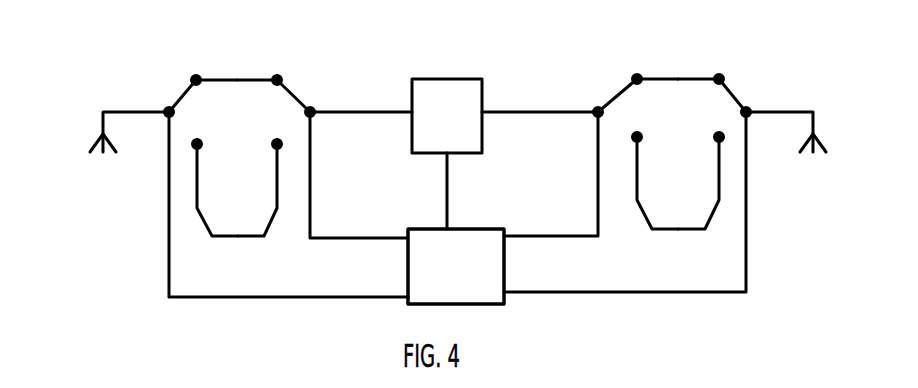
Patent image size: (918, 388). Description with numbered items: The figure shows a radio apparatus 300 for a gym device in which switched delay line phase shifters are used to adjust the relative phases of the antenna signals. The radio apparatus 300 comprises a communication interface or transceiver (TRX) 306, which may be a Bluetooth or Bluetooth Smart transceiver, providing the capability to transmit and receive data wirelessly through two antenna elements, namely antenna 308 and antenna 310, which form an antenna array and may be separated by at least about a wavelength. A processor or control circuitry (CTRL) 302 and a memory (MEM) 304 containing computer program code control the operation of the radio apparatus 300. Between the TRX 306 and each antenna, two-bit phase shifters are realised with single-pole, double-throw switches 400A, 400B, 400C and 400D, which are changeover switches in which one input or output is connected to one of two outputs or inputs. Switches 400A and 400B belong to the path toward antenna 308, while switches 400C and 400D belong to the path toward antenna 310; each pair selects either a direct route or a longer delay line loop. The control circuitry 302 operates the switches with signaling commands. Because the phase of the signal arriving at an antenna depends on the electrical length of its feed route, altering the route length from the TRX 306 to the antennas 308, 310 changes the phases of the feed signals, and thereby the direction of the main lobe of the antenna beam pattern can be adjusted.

The radio apparatus 300 is at (528, 52).
The processor (CTRL) 302 is at (456, 266).
The memory (MEM) 304 is at (456, 266).
The communication interface (TRX) 306 is at (447, 116).
The antenna element 308 is at (111, 203).
The antenna element 310 is at (813, 193).
The single-pole double-throw switch 400A is at (181, 95).
The single-pole double-throw switch 400B is at (297, 97).
The single-pole double-throw switch 400C is at (616, 97).
The single-pole double-throw switch 400D is at (731, 91).